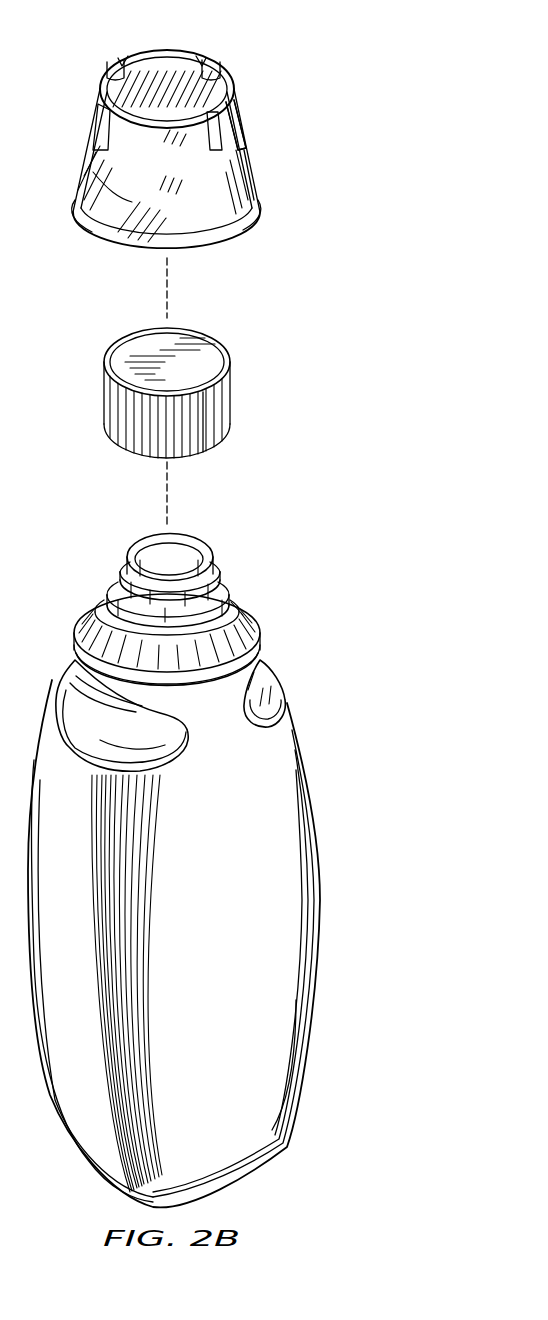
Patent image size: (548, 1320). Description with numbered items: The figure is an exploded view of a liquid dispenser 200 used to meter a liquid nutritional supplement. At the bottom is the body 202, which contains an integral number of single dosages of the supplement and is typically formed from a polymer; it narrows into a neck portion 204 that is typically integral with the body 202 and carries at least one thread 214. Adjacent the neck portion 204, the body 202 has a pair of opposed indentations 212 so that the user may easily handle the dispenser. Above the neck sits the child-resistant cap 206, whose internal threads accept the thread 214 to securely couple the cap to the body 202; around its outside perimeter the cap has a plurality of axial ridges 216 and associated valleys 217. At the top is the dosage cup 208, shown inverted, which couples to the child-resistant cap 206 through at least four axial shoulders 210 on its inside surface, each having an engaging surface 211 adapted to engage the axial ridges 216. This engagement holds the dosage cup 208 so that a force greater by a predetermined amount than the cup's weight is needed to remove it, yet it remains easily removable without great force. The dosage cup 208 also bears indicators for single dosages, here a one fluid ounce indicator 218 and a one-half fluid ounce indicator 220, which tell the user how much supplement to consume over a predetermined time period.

The liquid dispenser 200 is at (317, 563).
The body 202 is at (313, 920).
The neck portion 204 is at (152, 580).
The child-resistant cap 206 is at (232, 388).
The dosage cup 208 is at (234, 82).
The axial shoulders 210 is at (110, 74).
The engaging surface 211 is at (127, 58).
The opposed indentations 212 is at (72, 672).
The thread 214 is at (210, 571).
The axial ridges 216 is at (145, 442).
The valleys 217 is at (204, 440).
The one fluid ounce indicator 218 is at (102, 222).
The one-half fluid ounce indicator 220 is at (244, 155).